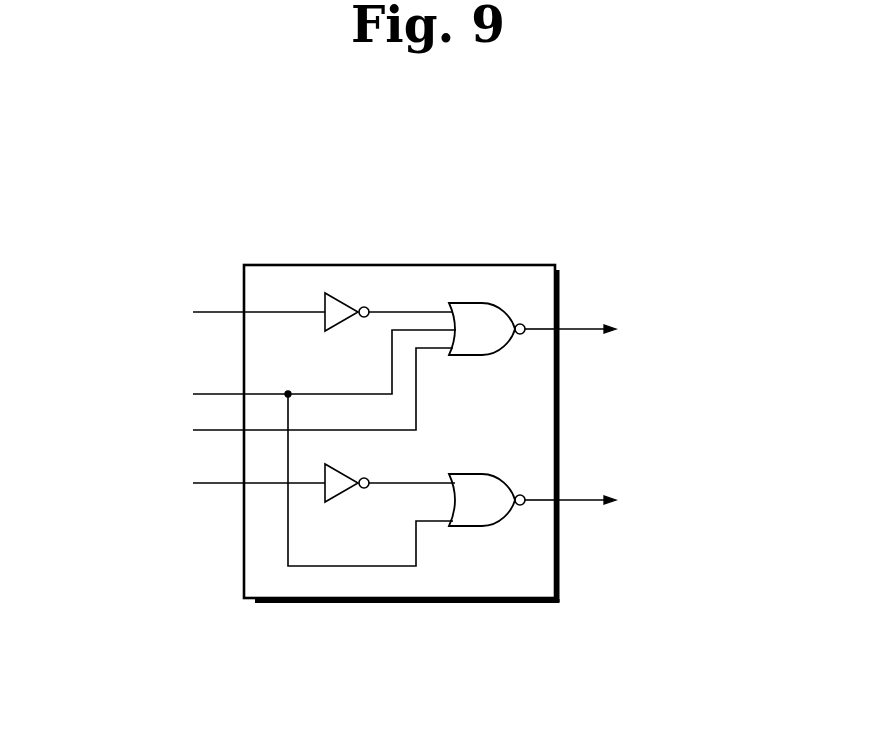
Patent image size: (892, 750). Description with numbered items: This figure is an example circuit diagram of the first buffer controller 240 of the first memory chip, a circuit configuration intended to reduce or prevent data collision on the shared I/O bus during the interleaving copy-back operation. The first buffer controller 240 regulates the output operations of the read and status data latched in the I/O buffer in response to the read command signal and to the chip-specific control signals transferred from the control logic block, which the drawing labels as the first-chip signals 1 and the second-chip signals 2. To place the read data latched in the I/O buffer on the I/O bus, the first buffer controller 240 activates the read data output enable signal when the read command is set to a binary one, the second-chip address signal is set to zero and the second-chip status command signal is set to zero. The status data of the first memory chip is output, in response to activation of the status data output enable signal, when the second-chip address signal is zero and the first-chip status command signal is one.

The first buffer controller 240 is at (532, 212).
The first chip (Chip1) signals 1 is at (413, 415).
The second chip (Chip2) signals 2 is at (148, 414).